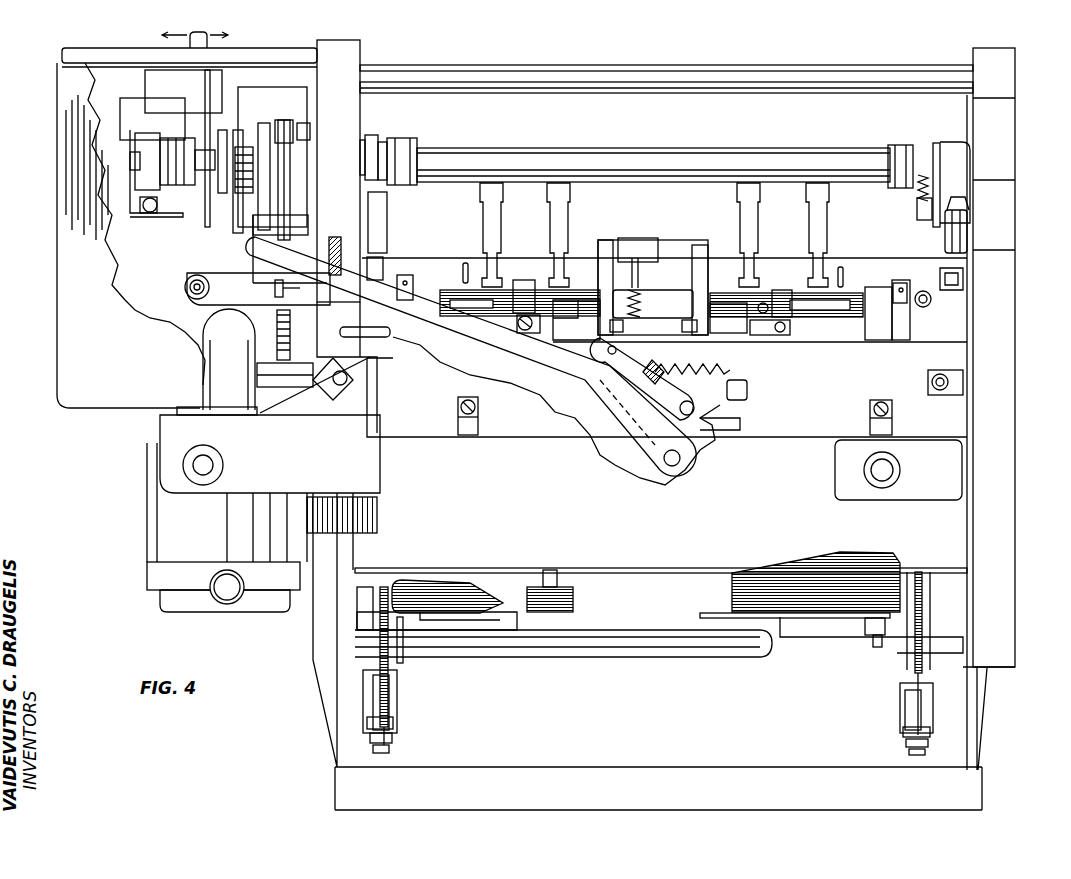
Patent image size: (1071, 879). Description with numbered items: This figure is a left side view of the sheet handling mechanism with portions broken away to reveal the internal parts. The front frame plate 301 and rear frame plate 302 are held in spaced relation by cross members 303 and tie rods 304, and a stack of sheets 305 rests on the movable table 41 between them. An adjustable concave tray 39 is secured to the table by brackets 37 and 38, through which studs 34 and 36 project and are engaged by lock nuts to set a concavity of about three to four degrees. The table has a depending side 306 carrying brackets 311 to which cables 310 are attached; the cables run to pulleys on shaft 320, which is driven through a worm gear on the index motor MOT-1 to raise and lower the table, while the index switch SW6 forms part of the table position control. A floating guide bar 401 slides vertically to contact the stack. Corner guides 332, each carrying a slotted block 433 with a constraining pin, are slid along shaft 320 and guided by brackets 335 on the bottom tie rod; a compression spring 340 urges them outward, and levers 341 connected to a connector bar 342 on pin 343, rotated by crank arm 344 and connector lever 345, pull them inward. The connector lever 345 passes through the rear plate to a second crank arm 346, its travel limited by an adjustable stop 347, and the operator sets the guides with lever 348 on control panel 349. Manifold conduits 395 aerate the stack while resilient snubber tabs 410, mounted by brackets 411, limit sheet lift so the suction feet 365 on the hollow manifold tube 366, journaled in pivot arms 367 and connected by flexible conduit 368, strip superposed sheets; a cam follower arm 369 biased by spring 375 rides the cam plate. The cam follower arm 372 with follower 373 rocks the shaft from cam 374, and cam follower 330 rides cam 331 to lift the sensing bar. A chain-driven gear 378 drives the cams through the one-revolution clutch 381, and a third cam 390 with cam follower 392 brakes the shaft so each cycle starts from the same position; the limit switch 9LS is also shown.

The index switch SW6 is at (189, 47).
The lever 348 is at (207, 36).
The control panel 349 is at (274, 48).
The rear frame plate 302 is at (363, 63).
The tie rods 304 is at (594, 67).
The front frame plate 301 is at (970, 53).
The gear 378 is at (213, 107).
The cam follower 392 is at (240, 130).
The cam 331 is at (287, 122).
The cam follower 373 is at (293, 112).
The clutch 381 is at (170, 140).
The cam follower arm 372 is at (300, 138).
The pivot arms 367 is at (403, 138).
The hollow manifold tube 366 is at (606, 148).
The cam 374 is at (293, 197).
The spring 375 is at (913, 201).
The cam follower 330 is at (293, 222).
The flexible conduit 368 is at (967, 234).
The cam follower arm 369 is at (930, 226).
The third cam 390 is at (227, 197).
The slotted block 433 is at (402, 277).
The floating guide bar 401 is at (450, 254).
The suction foot 365 is at (552, 243).
The second crank arm 346 is at (182, 272).
The adjustable guides 332 is at (411, 281).
The snubber tabs 410 is at (520, 287).
The limit switch 9LS is at (653, 286).
The manifold conduits 395 is at (800, 288).
The adjustable stop 347 is at (273, 288).
The brackets 411 is at (795, 335).
The levers 341 is at (440, 363).
The pin 343 is at (618, 377).
The connector bar 342 is at (700, 357).
The compression spring 340 is at (723, 377).
The stack of sheets 305 is at (822, 342).
The shaft 320 is at (737, 395).
The connector lever 345 is at (565, 413).
The crank arm 344 is at (690, 452).
The cross members 303 is at (807, 440).
The index motor MOT-1 is at (147, 488).
The stud 34 is at (427, 605).
The adjustable concave tray 39 is at (577, 608).
The bracket 37 is at (523, 618).
The movable table 41 is at (795, 623).
The stud 36 is at (863, 618).
The bracket 38 is at (828, 635).
The brackets 335 is at (390, 660).
The depending side 306 is at (398, 683).
The cables 310 is at (395, 707).
The brackets 311 is at (358, 733).